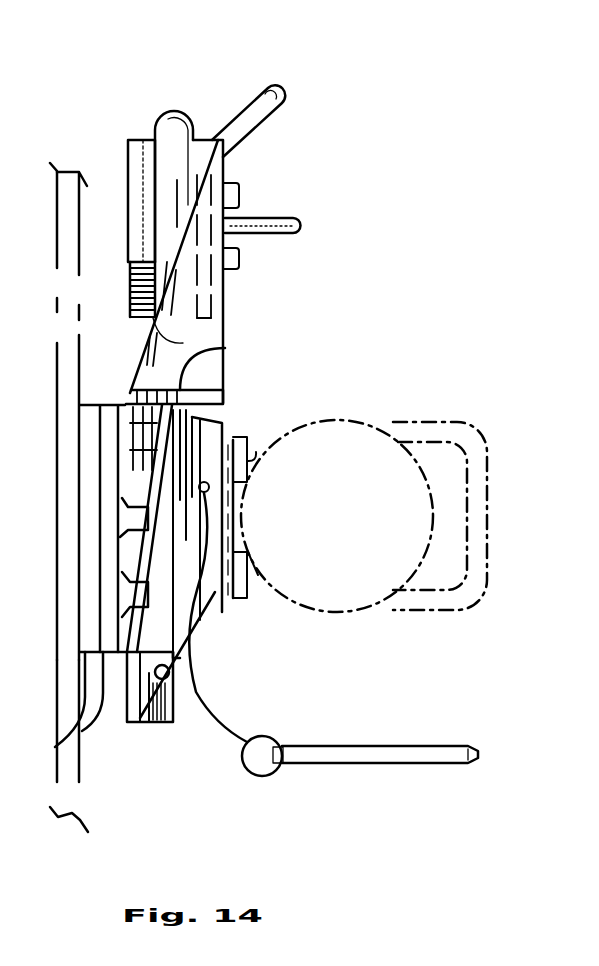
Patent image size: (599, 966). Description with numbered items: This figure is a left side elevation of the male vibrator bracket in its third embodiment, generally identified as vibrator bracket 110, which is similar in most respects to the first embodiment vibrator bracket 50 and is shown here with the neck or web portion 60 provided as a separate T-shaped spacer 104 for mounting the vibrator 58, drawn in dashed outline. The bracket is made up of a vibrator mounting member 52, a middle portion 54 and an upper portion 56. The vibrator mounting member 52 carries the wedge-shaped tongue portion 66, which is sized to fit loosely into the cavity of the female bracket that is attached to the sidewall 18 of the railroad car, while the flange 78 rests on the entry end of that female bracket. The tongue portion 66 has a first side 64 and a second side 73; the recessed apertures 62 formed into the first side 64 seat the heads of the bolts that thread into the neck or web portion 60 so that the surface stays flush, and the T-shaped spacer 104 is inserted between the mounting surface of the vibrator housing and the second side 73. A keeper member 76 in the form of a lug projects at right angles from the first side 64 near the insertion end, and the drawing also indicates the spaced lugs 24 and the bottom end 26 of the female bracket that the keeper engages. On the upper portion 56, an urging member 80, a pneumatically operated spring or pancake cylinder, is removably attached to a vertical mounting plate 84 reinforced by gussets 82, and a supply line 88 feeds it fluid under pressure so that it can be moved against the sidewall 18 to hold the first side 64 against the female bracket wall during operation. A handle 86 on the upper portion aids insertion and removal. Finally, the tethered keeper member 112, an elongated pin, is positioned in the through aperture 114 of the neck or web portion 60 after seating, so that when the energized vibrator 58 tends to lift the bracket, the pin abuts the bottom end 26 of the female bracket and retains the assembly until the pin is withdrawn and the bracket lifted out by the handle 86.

The sidewall 18 is at (57, 248).
The spaced lugs 24 is at (212, 650).
The bottom end 26 is at (82, 700).
The vibrator bracket 50 is at (150, 102).
The vibrator mounting member 52 is at (107, 559).
The middle portion 54 is at (235, 395).
The upper portion 56 is at (242, 312).
The vibrator 58 is at (385, 435).
The neck or web portion 60 is at (222, 613).
The recessed apertures 62 is at (128, 517).
The first side 64 is at (90, 600).
The tongue portion 66 is at (127, 525).
The second side 73 is at (140, 718).
The keeper member 76 is at (56, 746).
The flange 78 is at (225, 348).
The urging member 80 is at (128, 139).
The gussets 82 is at (140, 362).
The vertical mounting plate 84 is at (224, 283).
The handle 86 is at (268, 84).
The supply line 88 is at (265, 217).
The T-shaped spacer 104 is at (235, 634).
The vibrator bracket 110 is at (345, 255).
The keeper member 112 is at (380, 745).
The through aperture 114 is at (166, 680).